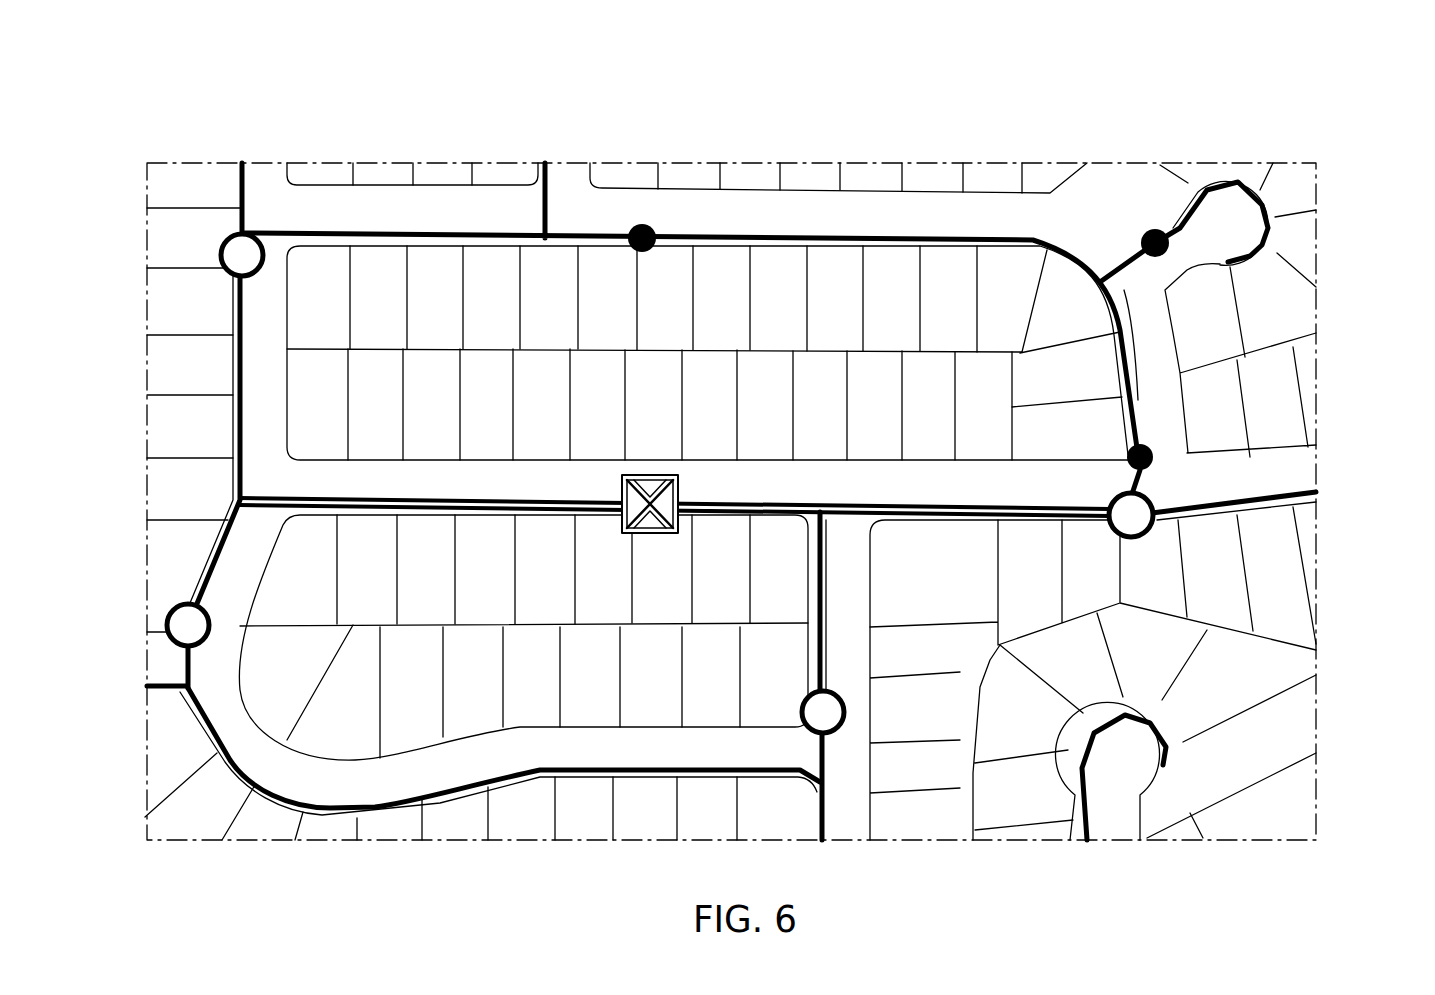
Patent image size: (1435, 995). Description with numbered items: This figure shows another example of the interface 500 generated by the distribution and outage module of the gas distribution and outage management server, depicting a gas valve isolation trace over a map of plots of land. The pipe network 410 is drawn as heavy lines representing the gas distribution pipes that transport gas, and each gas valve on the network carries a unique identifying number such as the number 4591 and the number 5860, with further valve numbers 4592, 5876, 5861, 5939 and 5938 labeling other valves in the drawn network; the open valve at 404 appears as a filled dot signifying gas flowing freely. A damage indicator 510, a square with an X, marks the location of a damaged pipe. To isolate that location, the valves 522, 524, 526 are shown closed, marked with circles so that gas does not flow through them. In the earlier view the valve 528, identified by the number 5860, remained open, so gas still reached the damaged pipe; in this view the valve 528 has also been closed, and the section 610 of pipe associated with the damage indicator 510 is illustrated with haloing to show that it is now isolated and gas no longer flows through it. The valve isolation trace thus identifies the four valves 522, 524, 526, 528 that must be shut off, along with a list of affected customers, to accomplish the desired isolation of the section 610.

The interface 500 is at (1301, 106).
The intersection node 404 is at (642, 237).
The pipe network 410 is at (332, 812).
The damage indicator 510 is at (622, 492).
The valve 522 is at (242, 255).
The valve 524 is at (188, 625).
The valve 526 is at (823, 712).
The valve 528 is at (1135, 525).
The section of pipe 610 is at (735, 507).
The node identifier 4592 is at (212, 232).
The number 4591 is at (688, 173).
The node identifier 5876 is at (1165, 222).
The node identifier 5861 is at (1188, 445).
The number 5860 is at (1183, 530).
The node identifier 5939 is at (192, 608).
The node identifier 5938 is at (815, 683).